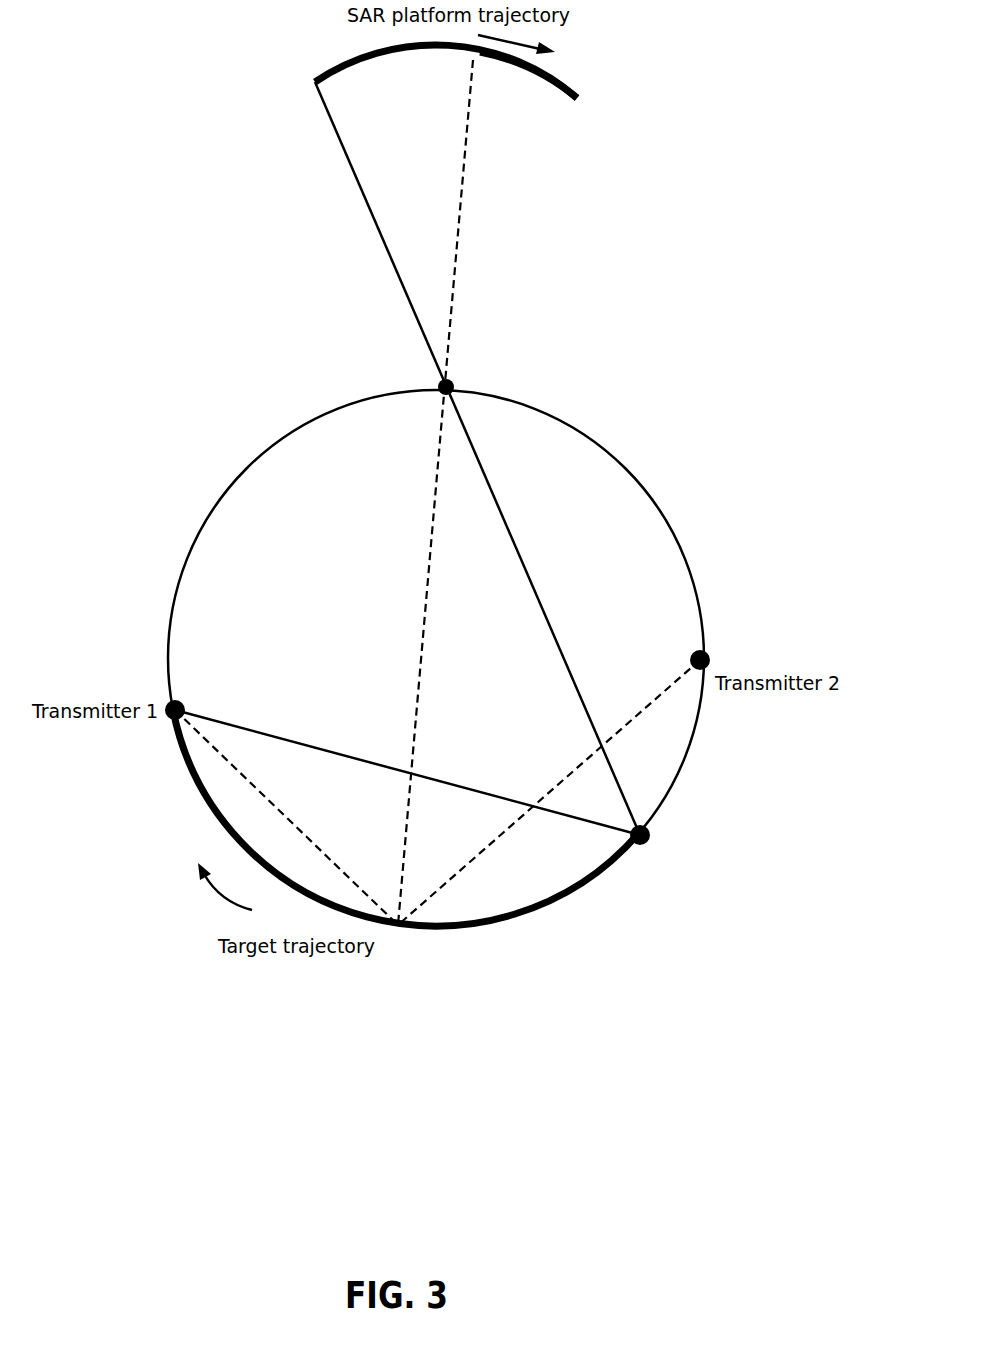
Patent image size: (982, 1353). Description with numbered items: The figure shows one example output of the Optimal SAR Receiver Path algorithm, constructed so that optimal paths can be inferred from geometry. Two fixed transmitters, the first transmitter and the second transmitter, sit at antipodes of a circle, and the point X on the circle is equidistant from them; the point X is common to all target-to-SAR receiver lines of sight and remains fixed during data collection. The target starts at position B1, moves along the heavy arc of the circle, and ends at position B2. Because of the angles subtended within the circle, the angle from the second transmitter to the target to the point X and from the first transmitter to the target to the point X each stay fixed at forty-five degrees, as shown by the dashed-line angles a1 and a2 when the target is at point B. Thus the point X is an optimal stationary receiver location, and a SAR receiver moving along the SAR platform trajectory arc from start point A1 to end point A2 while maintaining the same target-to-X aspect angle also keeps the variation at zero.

The SAR platform trajectory start point A1 is at (427, 71).
The SAR platform trajectory end point A2 is at (551, 79).
The point common to all target-to-SAR receiver lines of sight X is at (343, 330).
The target starting position B1 is at (657, 839).
The target ending position B2 is at (187, 697).
The target position B is at (405, 838).
The angle from transmitter 2 to target to point X a1 is at (549, 792).
The angle from transmitter 1 to target to point X a2 is at (286, 817).